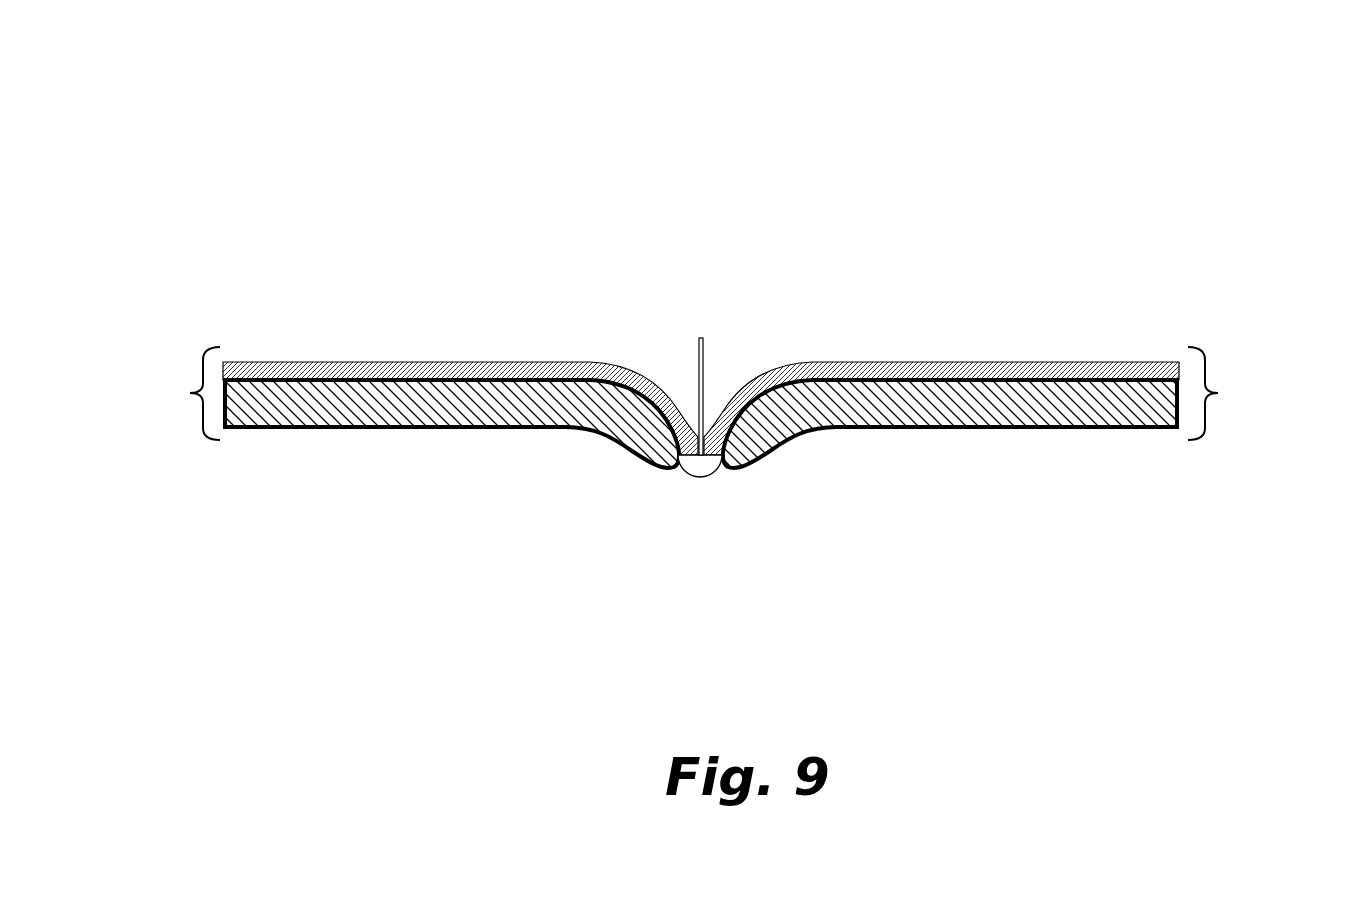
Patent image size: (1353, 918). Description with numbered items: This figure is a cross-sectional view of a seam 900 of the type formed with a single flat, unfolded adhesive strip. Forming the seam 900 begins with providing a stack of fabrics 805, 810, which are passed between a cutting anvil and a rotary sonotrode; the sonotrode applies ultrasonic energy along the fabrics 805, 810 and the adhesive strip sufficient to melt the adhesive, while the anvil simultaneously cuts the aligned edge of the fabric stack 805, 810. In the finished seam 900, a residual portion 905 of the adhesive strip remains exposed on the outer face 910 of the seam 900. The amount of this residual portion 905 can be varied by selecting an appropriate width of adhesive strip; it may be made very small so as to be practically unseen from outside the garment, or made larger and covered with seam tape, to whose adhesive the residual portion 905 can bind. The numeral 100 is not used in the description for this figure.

The seam 900 is at (298, 145).
The fabric 805 is at (183, 393).
The fabric 810 is at (1233, 392).
The outer face 910 is at (415, 335).
The flexible display panel 100 is at (270, 450).
The residual portion 905 is at (700, 338).